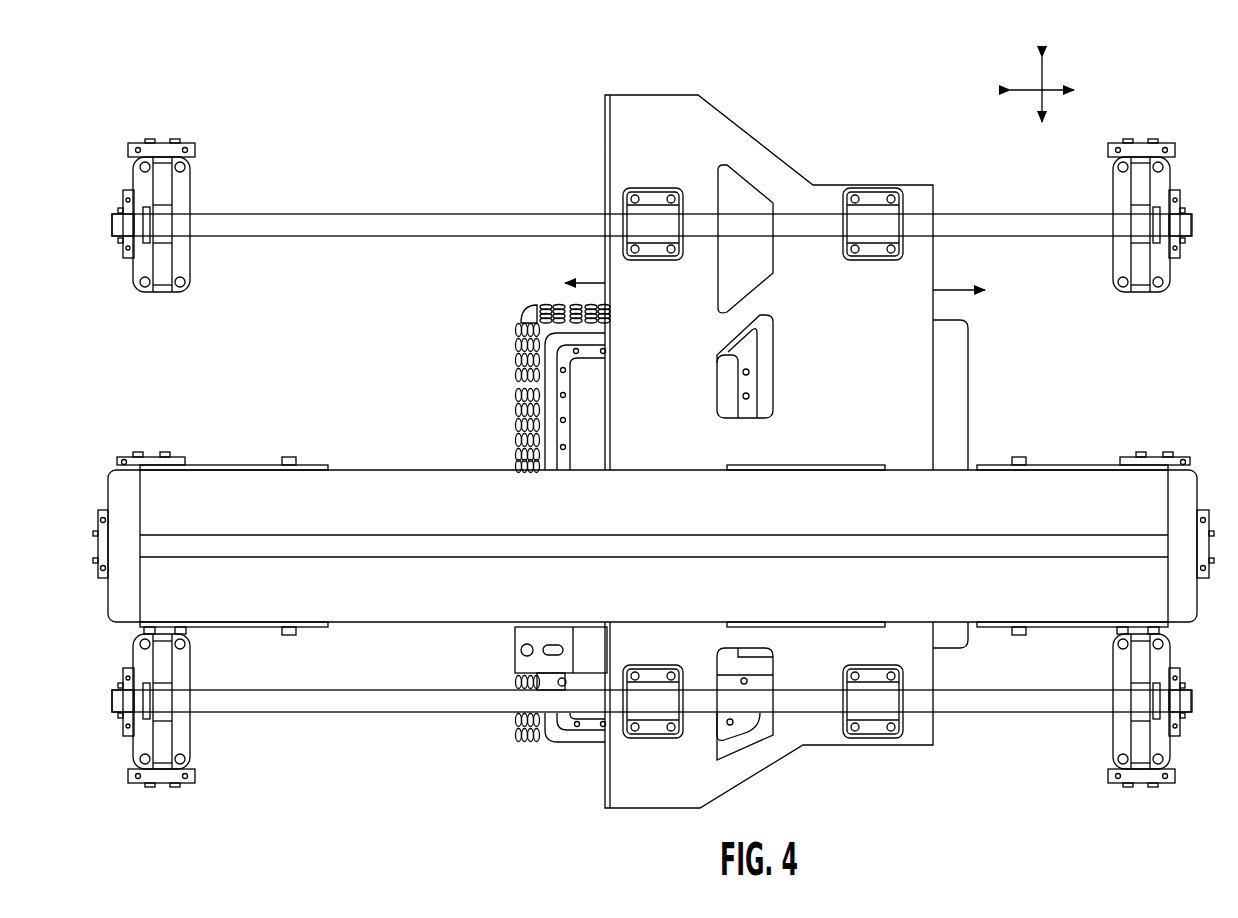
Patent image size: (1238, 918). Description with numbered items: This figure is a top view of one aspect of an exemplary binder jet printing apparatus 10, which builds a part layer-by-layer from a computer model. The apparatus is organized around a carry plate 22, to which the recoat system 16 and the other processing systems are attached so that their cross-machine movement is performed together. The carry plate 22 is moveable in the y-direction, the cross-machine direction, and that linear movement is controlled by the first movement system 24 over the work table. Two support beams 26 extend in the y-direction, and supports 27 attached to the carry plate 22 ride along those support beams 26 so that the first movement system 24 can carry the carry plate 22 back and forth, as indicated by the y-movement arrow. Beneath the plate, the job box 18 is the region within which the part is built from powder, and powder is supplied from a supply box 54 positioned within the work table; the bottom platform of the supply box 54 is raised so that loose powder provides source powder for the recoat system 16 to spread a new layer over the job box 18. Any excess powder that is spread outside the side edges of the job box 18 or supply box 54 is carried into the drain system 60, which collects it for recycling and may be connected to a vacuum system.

The binder jet printing apparatus 10 is at (335, 75).
The carry plate 22 is at (705, 133).
The supports 27 is at (650, 215).
The support beams 26 is at (345, 228).
The first movement system 24 is at (410, 440).
The drain system 60 is at (490, 356).
The job box 18 is at (577, 408).
The recoat system 16 is at (513, 655).
The supply box 54 is at (577, 684).